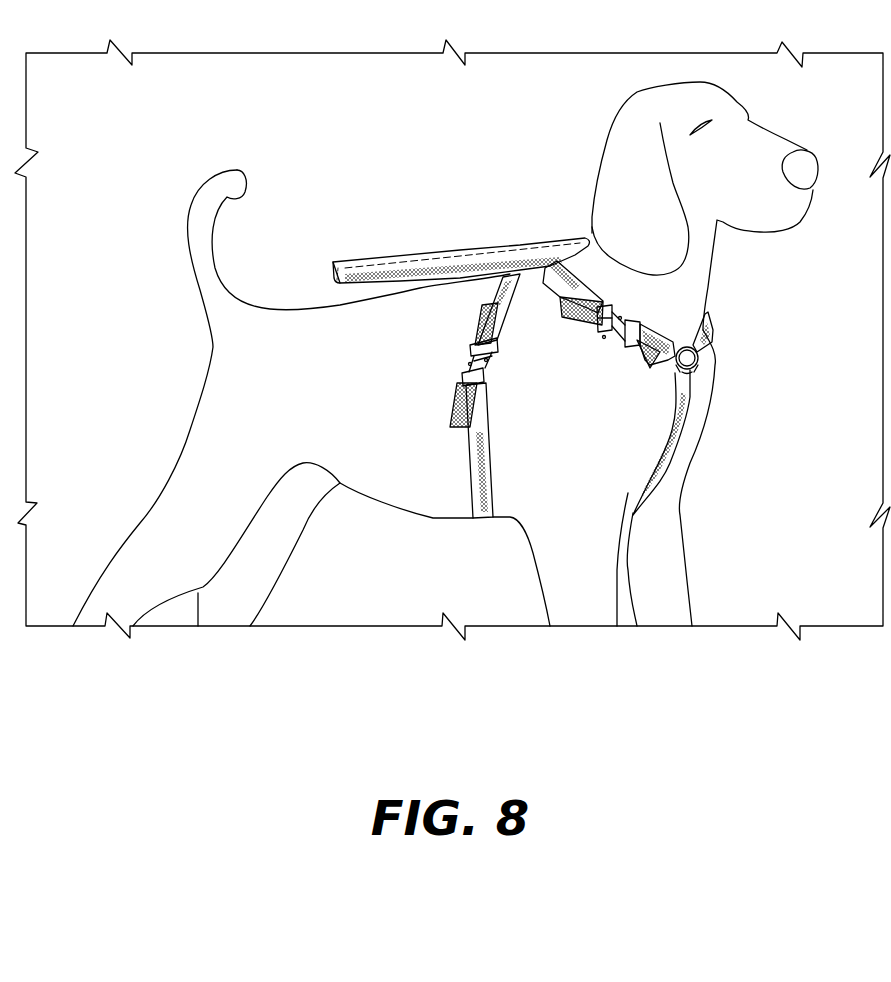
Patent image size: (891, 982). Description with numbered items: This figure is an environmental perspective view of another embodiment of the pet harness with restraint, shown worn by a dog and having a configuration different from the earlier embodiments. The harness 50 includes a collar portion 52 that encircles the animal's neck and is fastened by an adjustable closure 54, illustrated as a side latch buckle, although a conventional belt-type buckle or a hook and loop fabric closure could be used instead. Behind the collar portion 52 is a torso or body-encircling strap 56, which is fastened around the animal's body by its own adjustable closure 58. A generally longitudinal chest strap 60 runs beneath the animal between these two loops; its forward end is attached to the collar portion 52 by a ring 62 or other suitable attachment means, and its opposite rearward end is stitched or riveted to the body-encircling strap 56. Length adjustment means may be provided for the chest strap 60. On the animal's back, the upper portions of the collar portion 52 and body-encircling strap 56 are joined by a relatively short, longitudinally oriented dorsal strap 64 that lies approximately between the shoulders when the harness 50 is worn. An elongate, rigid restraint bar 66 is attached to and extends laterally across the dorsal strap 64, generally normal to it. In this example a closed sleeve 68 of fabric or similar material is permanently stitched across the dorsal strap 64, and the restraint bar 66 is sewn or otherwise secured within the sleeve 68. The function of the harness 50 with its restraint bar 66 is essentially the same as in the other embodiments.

The harness 50 is at (727, 508).
The collar portion 52 is at (708, 330).
The adjustable closure 54 is at (607, 330).
The body-encircling strap 56 is at (480, 520).
The adjustable closure 58 is at (463, 364).
The chest strap 60 is at (690, 433).
The ring 62 is at (697, 363).
The dorsal strap 64 is at (530, 273).
The restraint bar 66 is at (482, 245).
The sleeve 68 is at (340, 263).